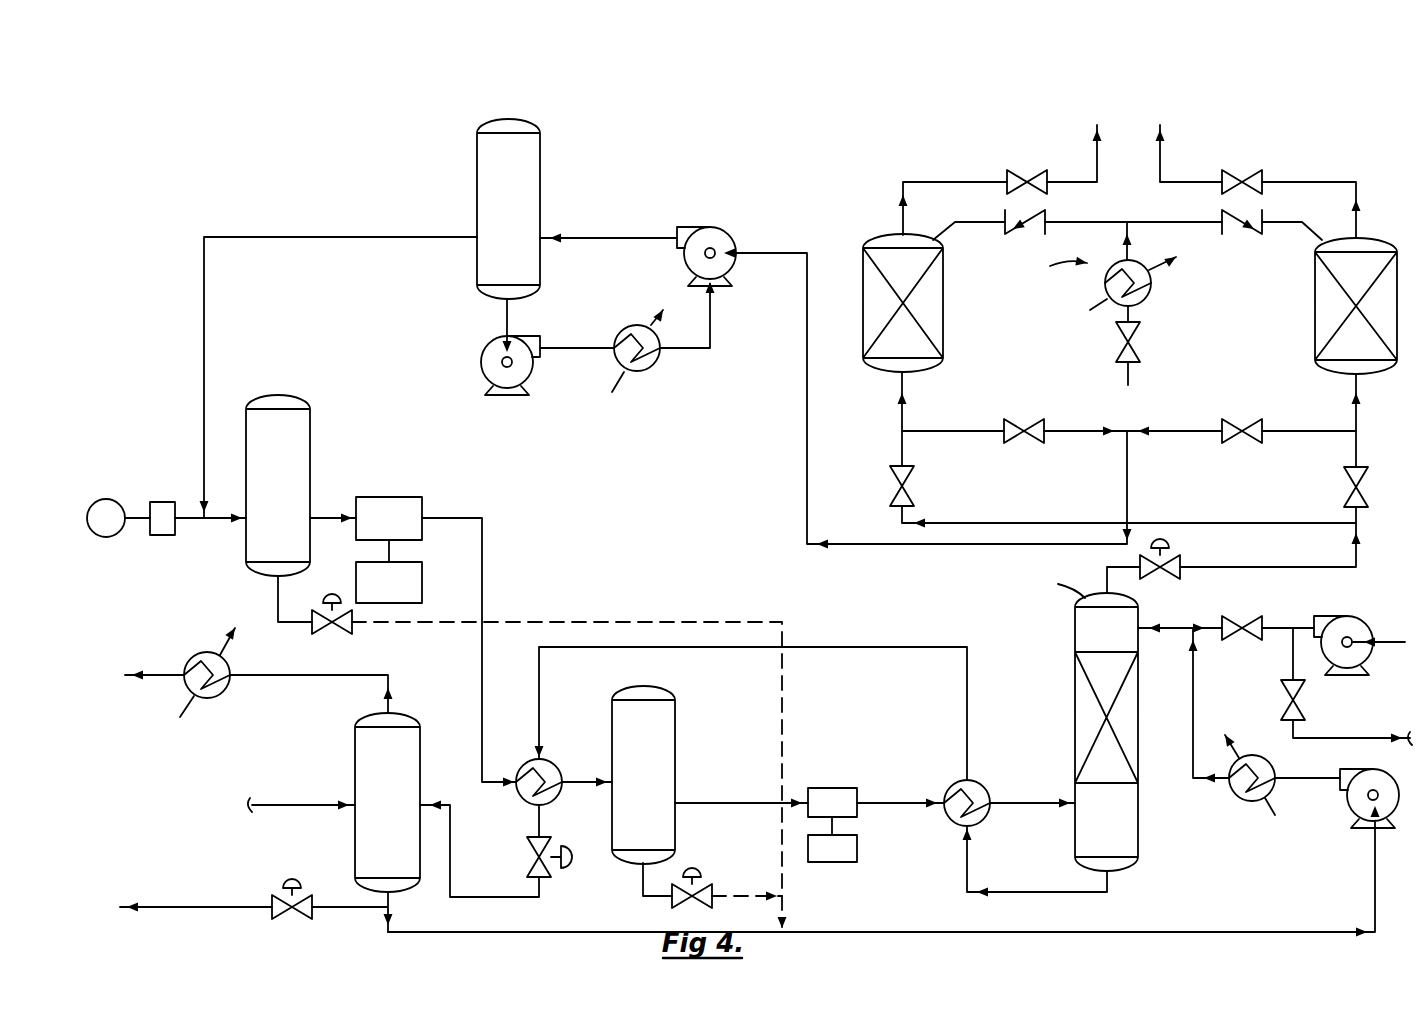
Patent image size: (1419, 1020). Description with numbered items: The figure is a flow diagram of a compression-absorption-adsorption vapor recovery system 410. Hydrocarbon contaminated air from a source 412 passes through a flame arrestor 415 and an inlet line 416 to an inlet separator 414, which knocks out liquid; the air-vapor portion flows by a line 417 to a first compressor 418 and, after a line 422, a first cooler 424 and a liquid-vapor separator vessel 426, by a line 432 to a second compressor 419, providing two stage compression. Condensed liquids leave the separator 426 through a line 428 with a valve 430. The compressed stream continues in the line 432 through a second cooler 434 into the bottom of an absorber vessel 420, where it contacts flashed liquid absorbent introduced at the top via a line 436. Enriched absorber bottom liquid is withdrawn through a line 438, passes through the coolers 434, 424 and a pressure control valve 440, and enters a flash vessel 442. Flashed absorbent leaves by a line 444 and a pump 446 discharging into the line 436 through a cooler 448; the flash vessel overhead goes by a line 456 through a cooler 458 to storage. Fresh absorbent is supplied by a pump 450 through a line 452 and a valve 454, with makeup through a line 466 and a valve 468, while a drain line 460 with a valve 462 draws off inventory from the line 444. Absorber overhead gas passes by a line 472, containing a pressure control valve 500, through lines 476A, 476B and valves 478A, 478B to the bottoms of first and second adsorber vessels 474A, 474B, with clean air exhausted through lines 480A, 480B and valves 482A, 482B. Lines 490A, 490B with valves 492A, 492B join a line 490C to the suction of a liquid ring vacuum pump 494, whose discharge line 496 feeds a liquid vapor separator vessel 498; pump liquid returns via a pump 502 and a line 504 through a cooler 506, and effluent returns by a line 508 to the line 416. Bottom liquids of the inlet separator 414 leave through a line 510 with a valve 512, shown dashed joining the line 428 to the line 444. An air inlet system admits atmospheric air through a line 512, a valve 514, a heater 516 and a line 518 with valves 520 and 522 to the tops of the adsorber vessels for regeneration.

The vapor recovery system 410 is at (770, 147).
The source of hydrocarbon contaminated air 412 is at (112, 500).
The inlet separator 414 is at (312, 440).
The flame arrestor 415 is at (175, 488).
The inlet line 416 is at (183, 528).
The line 417 is at (330, 508).
The first compressor 418 is at (398, 497).
The second compressor 419 is at (832, 788).
The absorber vessel 420 is at (1075, 682).
The line 422 is at (482, 538).
The first cooler 424 is at (552, 762).
The liquid-vapor separator vessel 426 is at (677, 728).
The line 428 is at (643, 904).
The valve 430 is at (700, 877).
The line 432 is at (735, 803).
The second cooler 434 is at (948, 822).
The line 436 is at (1180, 628).
The line 438 is at (541, 822).
The pressure control valve 440 is at (548, 878).
The flash vessel 442 is at (420, 750).
The line 444 is at (548, 910).
The pump 446 is at (1356, 768).
The cooler 448 is at (1238, 796).
The pump 450 is at (1340, 618).
The line 452 is at (1275, 636).
The valve 454 is at (1250, 616).
The line 456 is at (362, 675).
The cooler 458 is at (233, 660).
The drain line 460 is at (232, 907).
The valve 462 is at (300, 919).
The line 466 is at (297, 805).
The valve 468 is at (1305, 706).
The line 472 is at (1200, 567).
The first adsorber vessel 474A is at (1315, 300).
The second adsorber vessel 474B is at (943, 327).
The line 476A is at (1360, 405).
The line 476B is at (902, 410).
The valve 478A is at (1368, 498).
The valve 478B is at (892, 497).
The line 480A is at (1360, 202).
The line 480B is at (903, 212).
The valve 482A is at (1260, 170).
The valve 482B is at (1025, 170).
The line 490A is at (1295, 431).
The line 490B is at (960, 431).
The line 490C is at (807, 355).
The valve 492A is at (1235, 420).
The valve 492B is at (1035, 420).
The liquid ring vacuum pump 494 is at (712, 227).
The line 496 is at (592, 238).
The liquid vapor separator vessel 498 is at (540, 163).
The pressure control valve 500 is at (1170, 548).
The pump 502 is at (502, 400).
The line 504 is at (508, 321).
The cooler 506 is at (655, 366).
The line 508 is at (204, 327).
The line 510 is at (278, 607).
The valve 512 is at (332, 602).
The valve 514 is at (1140, 348).
The heater 516 is at (1152, 285).
The line 518 is at (1103, 222).
The valve 520 is at (1237, 232).
The valve 522 is at (1035, 233).